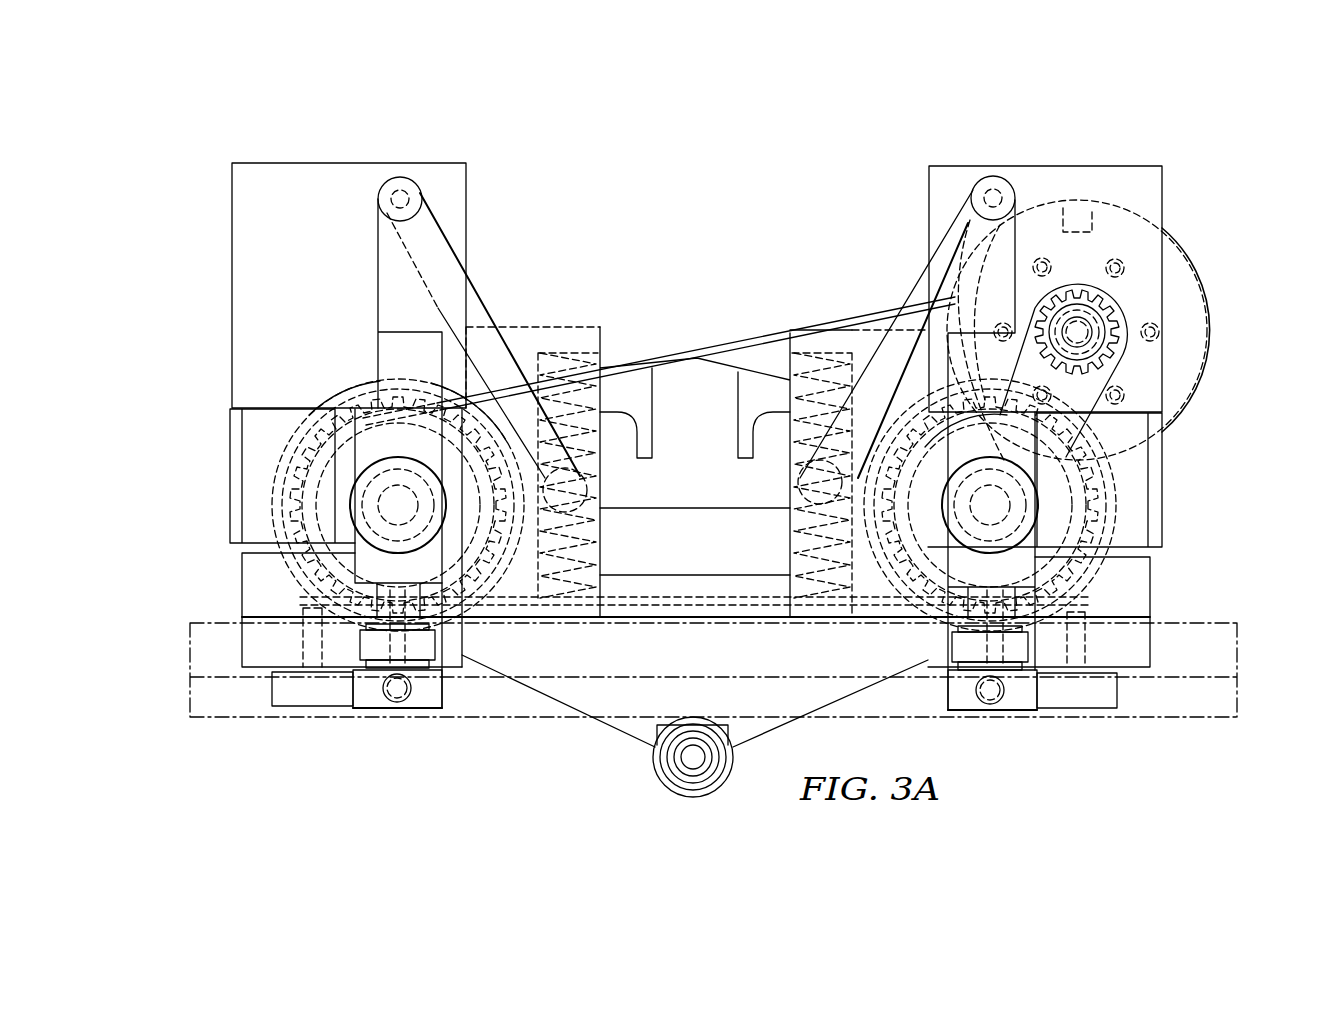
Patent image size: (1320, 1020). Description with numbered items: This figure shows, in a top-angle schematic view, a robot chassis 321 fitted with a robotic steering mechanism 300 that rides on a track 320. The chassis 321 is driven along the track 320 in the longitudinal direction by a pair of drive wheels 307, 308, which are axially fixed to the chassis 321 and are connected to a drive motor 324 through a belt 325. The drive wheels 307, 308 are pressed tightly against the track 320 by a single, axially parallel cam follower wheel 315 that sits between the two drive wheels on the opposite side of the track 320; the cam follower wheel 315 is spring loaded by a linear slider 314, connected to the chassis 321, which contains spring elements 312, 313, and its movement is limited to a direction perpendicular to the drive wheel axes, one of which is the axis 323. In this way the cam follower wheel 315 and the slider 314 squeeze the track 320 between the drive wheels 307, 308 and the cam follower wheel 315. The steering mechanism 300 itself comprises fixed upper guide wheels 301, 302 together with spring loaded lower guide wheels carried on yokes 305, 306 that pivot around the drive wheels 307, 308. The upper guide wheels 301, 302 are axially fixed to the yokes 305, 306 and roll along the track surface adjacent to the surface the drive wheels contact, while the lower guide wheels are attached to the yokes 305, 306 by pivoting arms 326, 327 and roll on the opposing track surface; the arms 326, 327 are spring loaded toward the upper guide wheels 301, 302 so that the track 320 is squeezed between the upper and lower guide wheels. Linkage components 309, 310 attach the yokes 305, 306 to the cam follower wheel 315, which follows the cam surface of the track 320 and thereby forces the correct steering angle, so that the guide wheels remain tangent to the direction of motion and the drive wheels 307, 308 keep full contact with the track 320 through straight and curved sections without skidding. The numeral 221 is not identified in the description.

The steering mechanism 300 is at (616, 136).
The drive wheel 221 is at (392, 508).
The upper guide wheel 301 is at (425, 646).
The upper guide wheel 302 is at (955, 645).
The yoke 305 is at (378, 277).
The yoke 306 is at (1006, 255).
The drive wheel 307 is at (358, 400).
The drive wheel 308 is at (1093, 594).
The linkage component 309 is at (488, 302).
The linkage component 310 is at (912, 283).
The spring element 312 is at (560, 348).
The spring element 313 is at (820, 348).
The linear slider 314 is at (632, 740).
The cam follower wheel 315 is at (691, 798).
The track 320 is at (215, 712).
The robot chassis 321 is at (316, 170).
The drive wheel axis 323 is at (1010, 493).
The drive motor 324 is at (1212, 332).
The belt 325 is at (665, 348).
The pivoting arm 326 is at (298, 698).
The pivoting arm 327 is at (1088, 698).